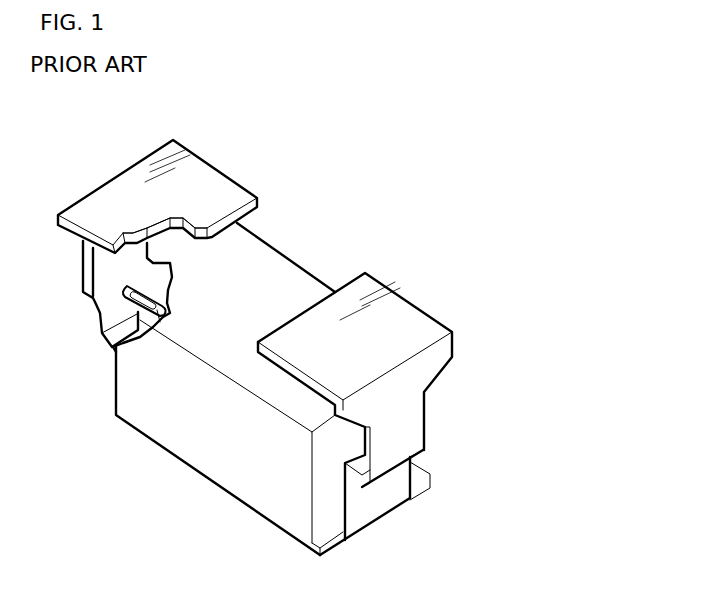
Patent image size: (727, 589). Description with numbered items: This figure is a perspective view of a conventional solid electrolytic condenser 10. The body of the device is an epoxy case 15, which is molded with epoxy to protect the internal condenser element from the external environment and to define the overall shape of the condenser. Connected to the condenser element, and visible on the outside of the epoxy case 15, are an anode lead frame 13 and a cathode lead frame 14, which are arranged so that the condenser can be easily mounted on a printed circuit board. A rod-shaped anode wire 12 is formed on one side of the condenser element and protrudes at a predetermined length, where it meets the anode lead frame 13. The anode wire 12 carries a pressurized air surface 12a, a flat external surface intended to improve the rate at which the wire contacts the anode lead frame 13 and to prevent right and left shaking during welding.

The solid electrolytic condenser 10 is at (337, 214).
The anode wire 12 is at (158, 308).
The pressurized air surface 12a is at (147, 290).
The anode lead frame 13 is at (100, 312).
The cathode lead frame 14 is at (378, 502).
The epoxy case 15 is at (207, 450).